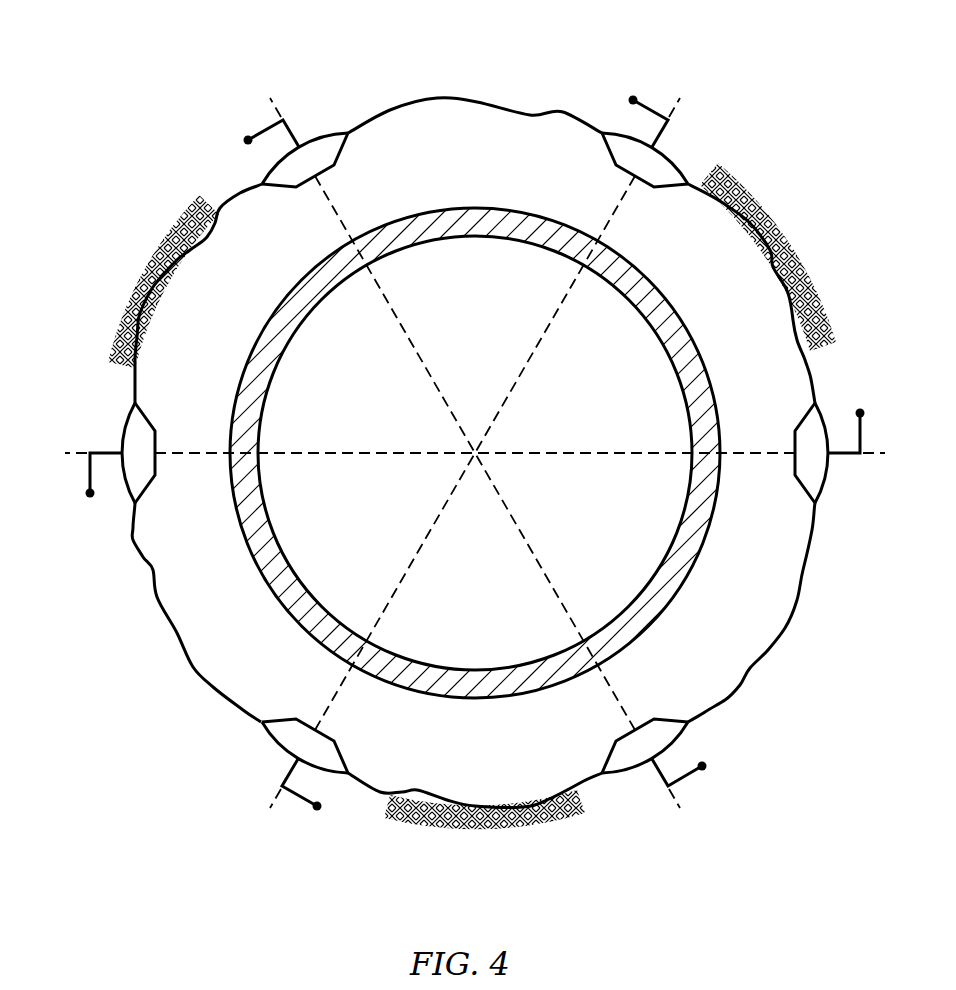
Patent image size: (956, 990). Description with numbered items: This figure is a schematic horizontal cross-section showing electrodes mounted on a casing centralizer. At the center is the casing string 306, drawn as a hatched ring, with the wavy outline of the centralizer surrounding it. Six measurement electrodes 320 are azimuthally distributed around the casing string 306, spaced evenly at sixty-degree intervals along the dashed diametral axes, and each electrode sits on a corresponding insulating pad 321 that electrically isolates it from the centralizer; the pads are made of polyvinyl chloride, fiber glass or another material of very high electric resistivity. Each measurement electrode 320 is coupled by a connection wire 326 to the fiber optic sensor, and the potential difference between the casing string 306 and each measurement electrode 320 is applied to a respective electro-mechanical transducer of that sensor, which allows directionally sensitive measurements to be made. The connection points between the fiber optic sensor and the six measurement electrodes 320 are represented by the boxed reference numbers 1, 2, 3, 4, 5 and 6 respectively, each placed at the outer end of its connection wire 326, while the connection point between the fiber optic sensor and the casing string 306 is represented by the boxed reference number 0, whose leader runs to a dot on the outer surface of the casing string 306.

The casing string 306 is at (438, 207).
The measurement electrode 320 is at (308, 142).
The insulating pad 321 is at (278, 177).
The connection wire 326 is at (265, 128).
The connection point between fiber optic sensor and casing string 0 is at (675, 313).
The connection point between fiber optic sensor and measurement electrode 1 is at (858, 368).
The connection point between fiber optic sensor and measurement electrode 2 is at (687, 71).
The connection point between fiber optic sensor and measurement electrode 3 is at (217, 107).
The connection point between fiber optic sensor and measurement electrode 4 is at (50, 494).
The connection point between fiber optic sensor and measurement electrode 5 is at (354, 828).
The connection point between fiber optic sensor and measurement electrode 6 is at (741, 744).